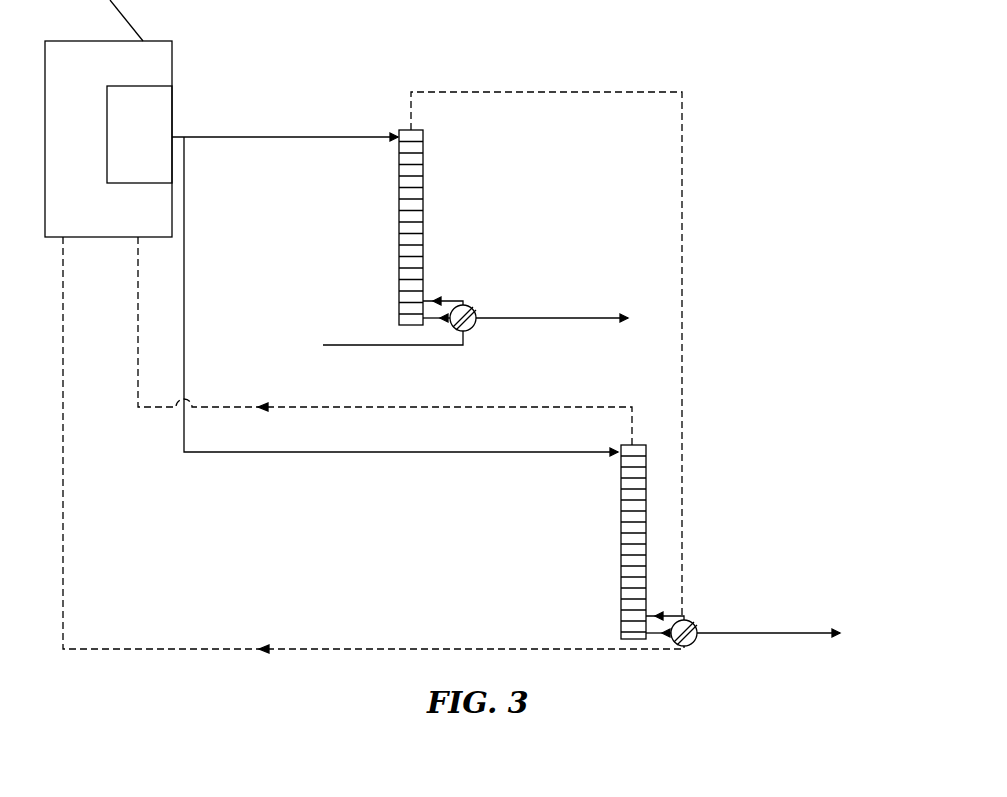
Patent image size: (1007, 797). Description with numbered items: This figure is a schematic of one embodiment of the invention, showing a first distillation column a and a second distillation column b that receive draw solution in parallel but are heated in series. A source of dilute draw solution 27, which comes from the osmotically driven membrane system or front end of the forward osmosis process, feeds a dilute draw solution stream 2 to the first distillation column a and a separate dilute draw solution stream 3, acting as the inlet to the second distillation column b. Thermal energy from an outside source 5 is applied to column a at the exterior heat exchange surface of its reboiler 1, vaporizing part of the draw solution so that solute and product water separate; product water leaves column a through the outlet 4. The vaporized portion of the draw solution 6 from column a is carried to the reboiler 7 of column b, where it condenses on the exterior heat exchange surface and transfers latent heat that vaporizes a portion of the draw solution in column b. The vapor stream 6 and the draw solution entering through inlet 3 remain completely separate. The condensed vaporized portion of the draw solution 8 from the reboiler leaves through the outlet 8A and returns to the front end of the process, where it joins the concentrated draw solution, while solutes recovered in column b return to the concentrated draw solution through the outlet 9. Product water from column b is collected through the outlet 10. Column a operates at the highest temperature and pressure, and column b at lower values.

The source of dilute draw solution 27 is at (161, 140).
The dilute draw solution stream 2 is at (326, 137).
The first distillation column a is at (399, 213).
The dilute draw solution stream 3 is at (518, 452).
The reboiler 1 is at (473, 308).
The outside source 5 is at (343, 345).
The outlet 4 is at (580, 318).
The vaporized portion of the draw solution 6 is at (510, 92).
The outlet 9 is at (548, 407).
The second distillation column b is at (621, 549).
The reboiler 7 is at (692, 622).
The outlet 8A is at (695, 645).
The outlet 10 is at (798, 633).
The condensed vaporized portion of the draw solution 8 is at (356, 649).